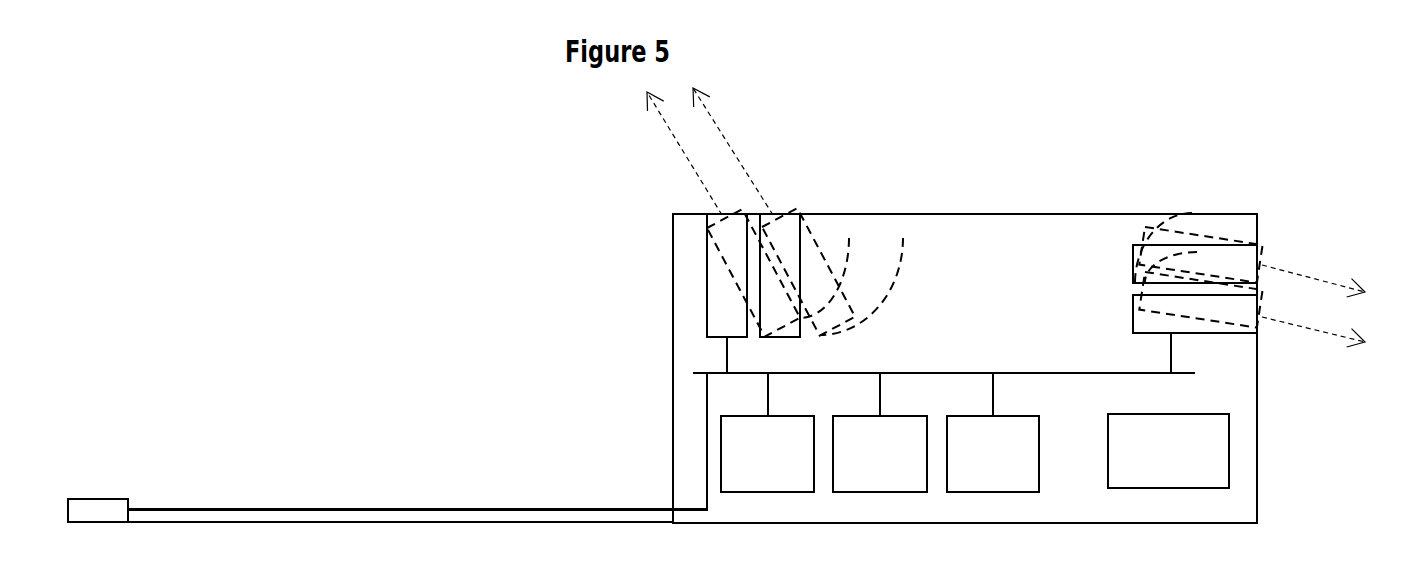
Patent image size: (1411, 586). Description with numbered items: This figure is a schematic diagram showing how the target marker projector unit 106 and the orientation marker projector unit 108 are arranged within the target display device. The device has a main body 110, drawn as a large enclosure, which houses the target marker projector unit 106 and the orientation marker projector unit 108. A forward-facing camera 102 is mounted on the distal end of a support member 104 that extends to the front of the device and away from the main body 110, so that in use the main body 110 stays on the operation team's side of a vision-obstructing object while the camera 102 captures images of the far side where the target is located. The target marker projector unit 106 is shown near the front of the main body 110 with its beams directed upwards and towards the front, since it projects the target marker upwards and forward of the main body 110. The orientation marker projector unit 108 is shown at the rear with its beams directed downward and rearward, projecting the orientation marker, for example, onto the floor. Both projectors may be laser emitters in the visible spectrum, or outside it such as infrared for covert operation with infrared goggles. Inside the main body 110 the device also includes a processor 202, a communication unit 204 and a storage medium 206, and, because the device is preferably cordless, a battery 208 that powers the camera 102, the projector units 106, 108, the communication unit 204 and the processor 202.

The forward-facing camera 102 is at (110, 491).
The support member 104 is at (443, 489).
The target marker projector unit 106 is at (815, 196).
The orientation marker projector unit 108 is at (1267, 225).
The main body 110 is at (1025, 205).
The processor 202 is at (767, 432).
The communication unit 204 is at (880, 432).
The storage medium 206 is at (993, 432).
The battery 208 is at (1168, 451).